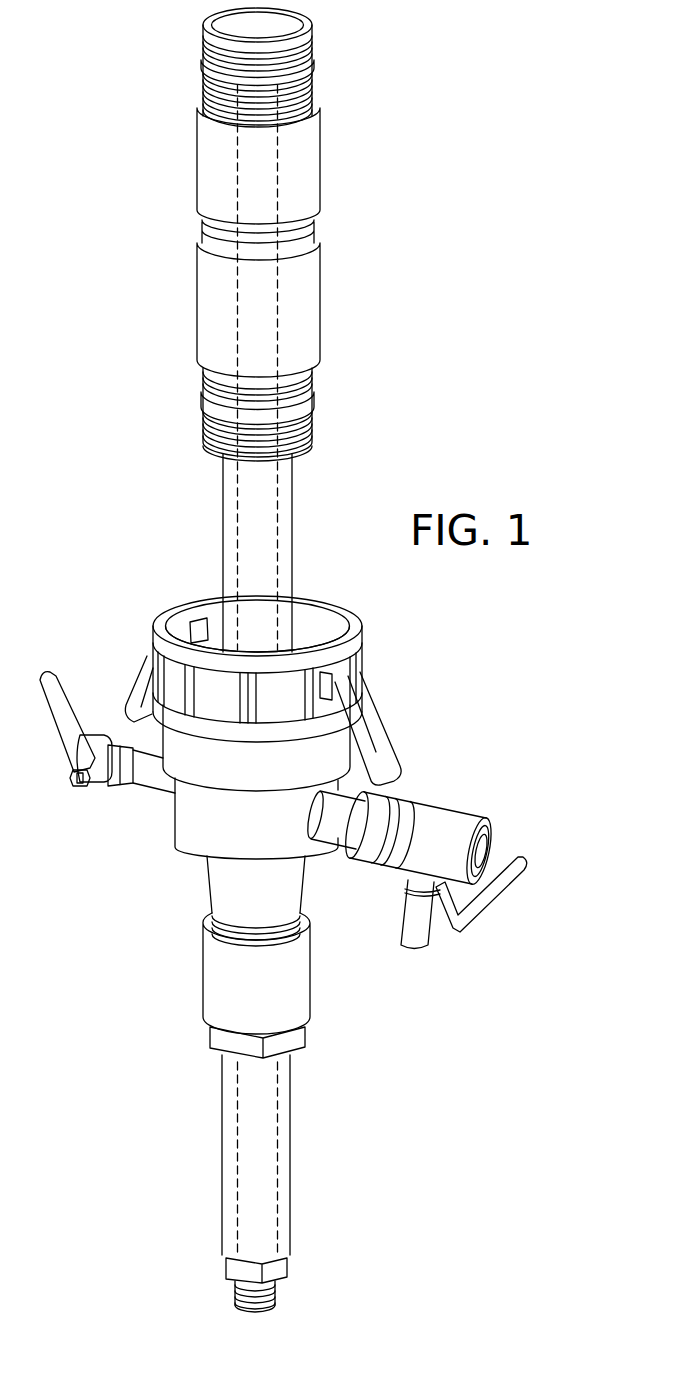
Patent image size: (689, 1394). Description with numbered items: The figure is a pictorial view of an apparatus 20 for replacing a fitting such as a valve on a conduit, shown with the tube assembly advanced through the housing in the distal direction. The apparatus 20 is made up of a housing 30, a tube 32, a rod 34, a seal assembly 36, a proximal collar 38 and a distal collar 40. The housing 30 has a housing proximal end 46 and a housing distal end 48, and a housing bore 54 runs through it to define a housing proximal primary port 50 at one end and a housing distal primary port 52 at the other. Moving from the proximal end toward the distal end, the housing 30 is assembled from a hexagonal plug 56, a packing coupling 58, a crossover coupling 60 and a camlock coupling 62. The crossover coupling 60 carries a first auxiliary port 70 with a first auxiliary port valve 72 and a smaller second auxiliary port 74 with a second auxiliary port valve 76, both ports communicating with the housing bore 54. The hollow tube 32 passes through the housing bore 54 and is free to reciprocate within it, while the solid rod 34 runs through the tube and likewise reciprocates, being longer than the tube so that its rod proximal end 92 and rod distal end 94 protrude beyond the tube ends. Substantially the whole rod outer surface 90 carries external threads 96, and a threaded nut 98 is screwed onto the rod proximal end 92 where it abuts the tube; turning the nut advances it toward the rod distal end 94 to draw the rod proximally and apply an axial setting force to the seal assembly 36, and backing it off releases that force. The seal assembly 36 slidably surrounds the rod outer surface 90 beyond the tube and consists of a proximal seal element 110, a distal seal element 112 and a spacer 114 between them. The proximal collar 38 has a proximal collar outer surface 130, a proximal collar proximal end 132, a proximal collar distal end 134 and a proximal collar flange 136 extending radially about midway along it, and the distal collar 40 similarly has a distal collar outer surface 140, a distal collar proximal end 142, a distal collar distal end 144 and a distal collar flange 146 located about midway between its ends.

The apparatus 20 is at (502, 361).
The housing 30 is at (523, 622).
The tube 32 is at (223, 488).
The rod 34 is at (237, 537).
The seal assembly 36 is at (400, 105).
The proximal collar 38 is at (313, 398).
The distal collar 40 is at (313, 61).
The housing proximal end 46 is at (318, 1052).
The housing distal end 48 is at (367, 605).
The housing proximal primary port 50 is at (225, 1058).
The housing distal primary port 52 is at (303, 617).
The housing bore 54 is at (318, 622).
The hexagonal plug 56 is at (222, 1043).
The packing coupling 58 is at (215, 980).
The crossover coupling 60 is at (200, 832).
The camlock coupling 62 is at (155, 642).
The first auxiliary port 70 is at (338, 830).
The first auxiliary port valve 72 is at (440, 808).
The second auxiliary port 74 is at (148, 790).
The second auxiliary port valve 76 is at (108, 746).
The rod outer surface 90 is at (235, 1300).
The rod proximal end 92 is at (285, 1300).
The rod distal end 94 is at (288, 96).
The external threads 96 is at (255, 1297).
The threaded nut 98 is at (236, 1272).
The proximal seal element 110 is at (197, 297).
The distal seal element 112 is at (197, 152).
The spacer 114 is at (203, 228).
The proximal collar outer surface 130 is at (312, 432).
The proximal collar proximal end 132 is at (203, 442).
The proximal collar distal end 134 is at (203, 362).
The proximal collar flange 136 is at (203, 400).
The distal collar outer surface 140 is at (312, 44).
The distal collar proximal end 142 is at (203, 108).
The distal collar distal end 144 is at (203, 27).
The distal collar flange 146 is at (203, 68).